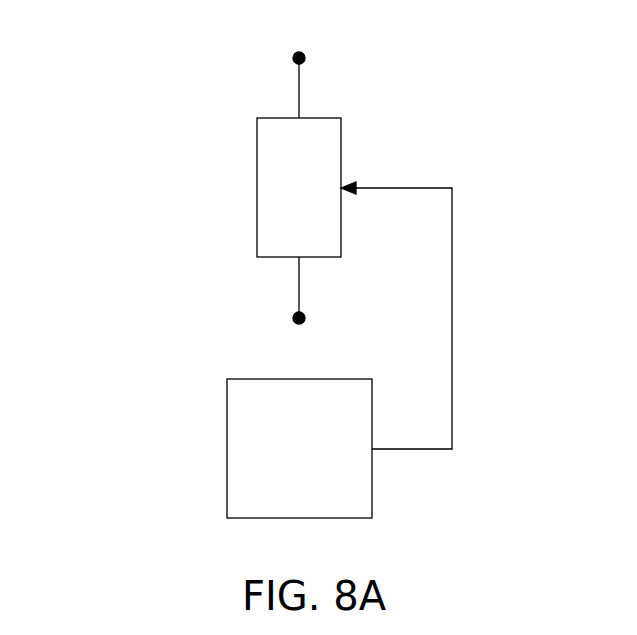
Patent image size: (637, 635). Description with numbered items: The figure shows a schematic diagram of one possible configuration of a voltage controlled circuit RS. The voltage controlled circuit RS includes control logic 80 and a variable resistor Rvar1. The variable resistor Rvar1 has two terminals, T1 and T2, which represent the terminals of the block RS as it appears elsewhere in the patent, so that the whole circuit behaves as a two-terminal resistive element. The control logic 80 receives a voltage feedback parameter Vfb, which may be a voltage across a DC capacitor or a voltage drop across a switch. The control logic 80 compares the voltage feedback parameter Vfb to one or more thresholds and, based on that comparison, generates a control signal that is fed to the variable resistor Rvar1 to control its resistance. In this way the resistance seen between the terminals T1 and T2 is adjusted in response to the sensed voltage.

The voltage controlled circuit RS is at (172, 52).
The variable resistor Rvar1 is at (257, 188).
The terminal T1 is at (305, 57).
The terminal T2 is at (305, 317).
The control logic 80 is at (372, 478).
The voltage feedback parameter Vfb is at (215, 449).